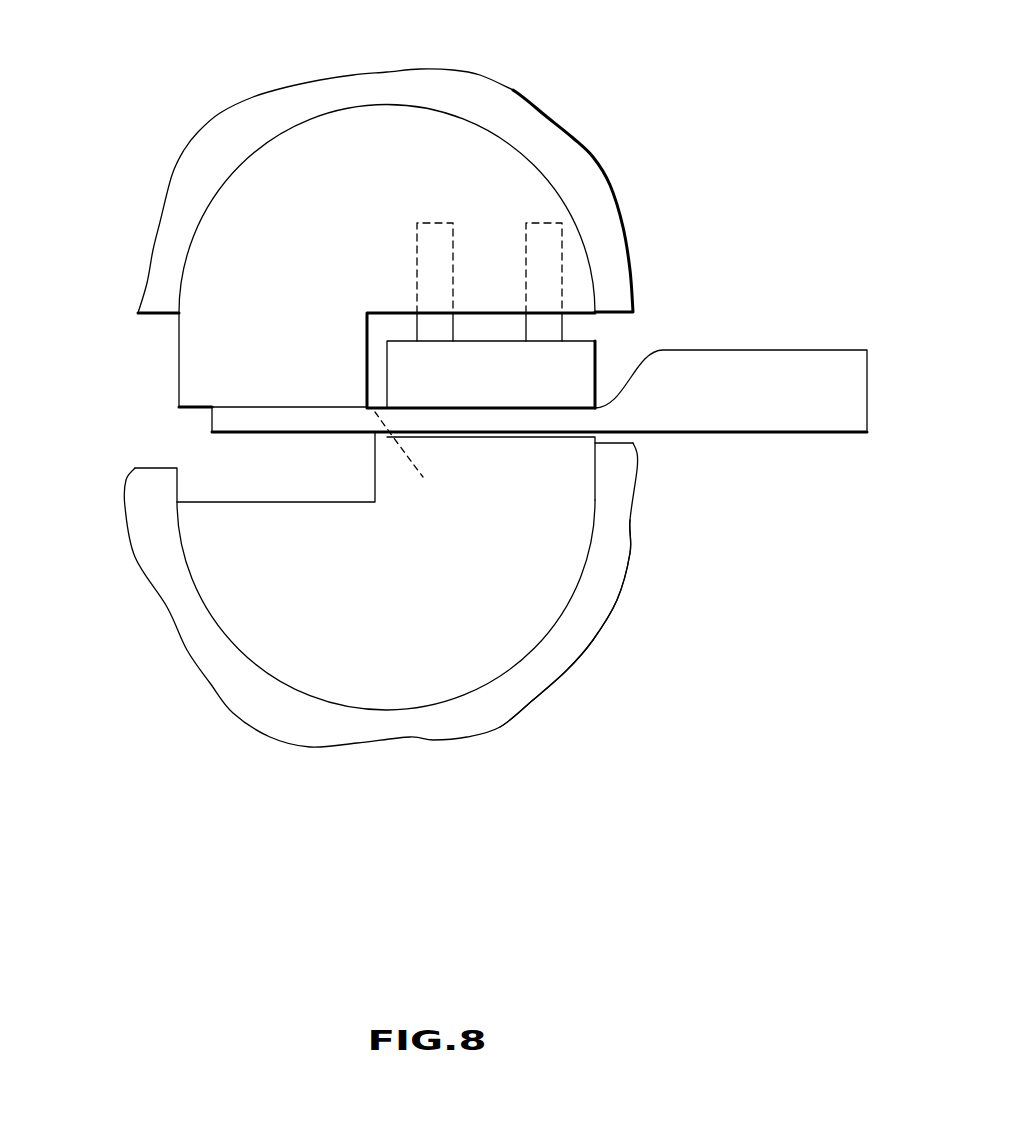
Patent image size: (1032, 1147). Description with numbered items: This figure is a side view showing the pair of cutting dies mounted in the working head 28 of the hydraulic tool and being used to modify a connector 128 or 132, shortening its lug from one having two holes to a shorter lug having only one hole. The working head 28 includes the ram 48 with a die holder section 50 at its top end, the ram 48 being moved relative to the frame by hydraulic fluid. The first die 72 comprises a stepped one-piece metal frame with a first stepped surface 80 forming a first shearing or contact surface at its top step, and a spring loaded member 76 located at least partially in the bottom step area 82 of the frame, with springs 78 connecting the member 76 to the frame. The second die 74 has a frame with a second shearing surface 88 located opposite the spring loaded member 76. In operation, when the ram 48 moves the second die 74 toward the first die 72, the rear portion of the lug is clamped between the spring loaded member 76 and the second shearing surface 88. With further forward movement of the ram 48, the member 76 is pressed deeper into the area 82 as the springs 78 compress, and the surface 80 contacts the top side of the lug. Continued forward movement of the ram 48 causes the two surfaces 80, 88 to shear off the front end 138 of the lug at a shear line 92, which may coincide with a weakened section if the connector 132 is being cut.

The working head 28 is at (182, 220).
The ram 48 is at (497, 720).
The die holder section 50 is at (573, 658).
The first die 72 is at (260, 182).
The second die 74 is at (288, 660).
The spring loaded member 76 is at (580, 366).
The springs 78 is at (427, 327).
The first stepped surface 80 is at (233, 408).
The bottom step area 82 is at (483, 327).
The second shearing surface 88 is at (525, 437).
The shear line 92 is at (411, 464).
The connector 128 is at (743, 437).
The connector 132 is at (728, 433).
The front end of the lug 138 is at (218, 425).